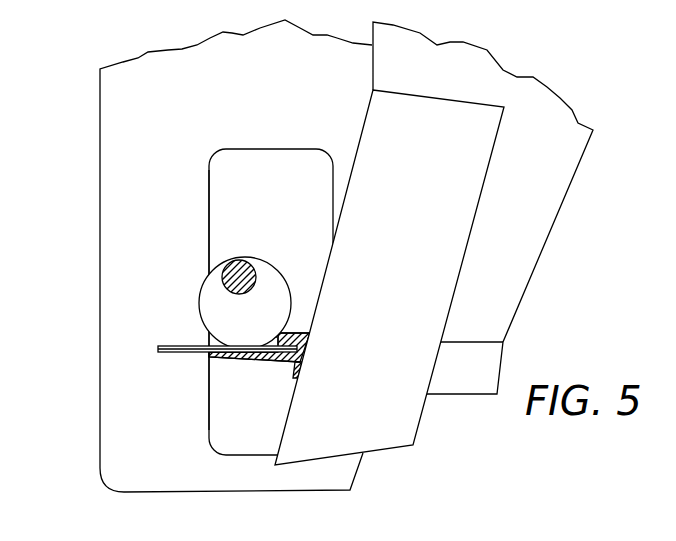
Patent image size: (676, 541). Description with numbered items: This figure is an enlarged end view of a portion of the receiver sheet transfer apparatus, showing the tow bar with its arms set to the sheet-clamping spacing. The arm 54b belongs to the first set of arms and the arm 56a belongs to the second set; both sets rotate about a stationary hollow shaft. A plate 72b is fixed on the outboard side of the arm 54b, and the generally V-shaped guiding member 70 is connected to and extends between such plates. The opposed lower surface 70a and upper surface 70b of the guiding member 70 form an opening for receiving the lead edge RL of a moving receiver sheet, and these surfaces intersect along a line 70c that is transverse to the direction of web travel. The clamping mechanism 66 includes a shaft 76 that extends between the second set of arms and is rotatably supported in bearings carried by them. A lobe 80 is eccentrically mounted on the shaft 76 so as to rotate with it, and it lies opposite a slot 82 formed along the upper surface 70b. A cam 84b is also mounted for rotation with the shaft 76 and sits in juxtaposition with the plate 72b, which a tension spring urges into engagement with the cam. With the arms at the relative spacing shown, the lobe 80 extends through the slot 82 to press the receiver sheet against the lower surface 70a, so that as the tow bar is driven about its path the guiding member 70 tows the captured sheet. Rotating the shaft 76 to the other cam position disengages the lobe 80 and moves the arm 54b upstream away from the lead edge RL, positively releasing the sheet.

The arm 54b is at (561, 211).
The arm 56a is at (99, 302).
The clamping mechanism 66 is at (205, 270).
The guiding member 70 is at (311, 323).
The lower surface 70a is at (257, 358).
The upper surface 70b is at (302, 326).
The line 70c is at (298, 378).
The plate 72b is at (447, 100).
The shaft 76 is at (236, 259).
The lobe 80 is at (289, 296).
The slot 82 is at (266, 330).
The cam 84b is at (265, 148).
The lead edge RL is at (200, 357).